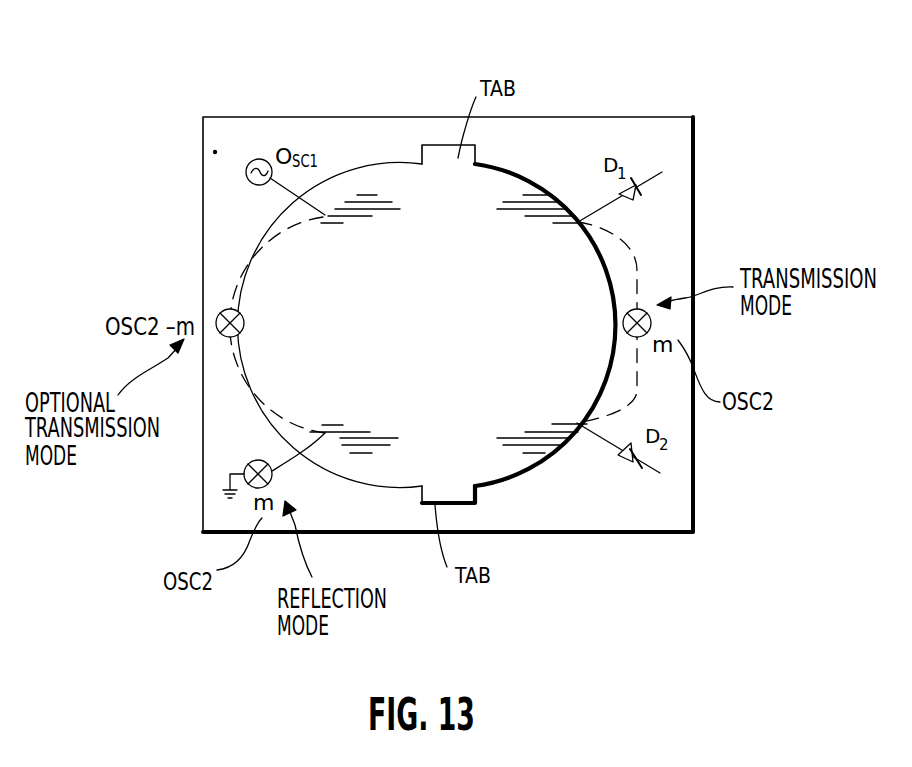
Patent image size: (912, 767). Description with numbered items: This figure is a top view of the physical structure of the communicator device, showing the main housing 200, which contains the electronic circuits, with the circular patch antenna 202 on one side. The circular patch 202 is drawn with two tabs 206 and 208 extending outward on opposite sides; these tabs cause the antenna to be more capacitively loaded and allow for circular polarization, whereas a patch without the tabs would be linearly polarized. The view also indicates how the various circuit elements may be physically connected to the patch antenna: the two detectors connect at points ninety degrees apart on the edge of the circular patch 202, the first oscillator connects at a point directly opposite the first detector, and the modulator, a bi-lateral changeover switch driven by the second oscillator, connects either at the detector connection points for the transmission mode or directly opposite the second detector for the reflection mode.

The main housing 200 is at (693, 160).
The circular patch antenna 202 is at (447, 231).
The tab 206 is at (430, 158).
The tab 208 is at (460, 505).